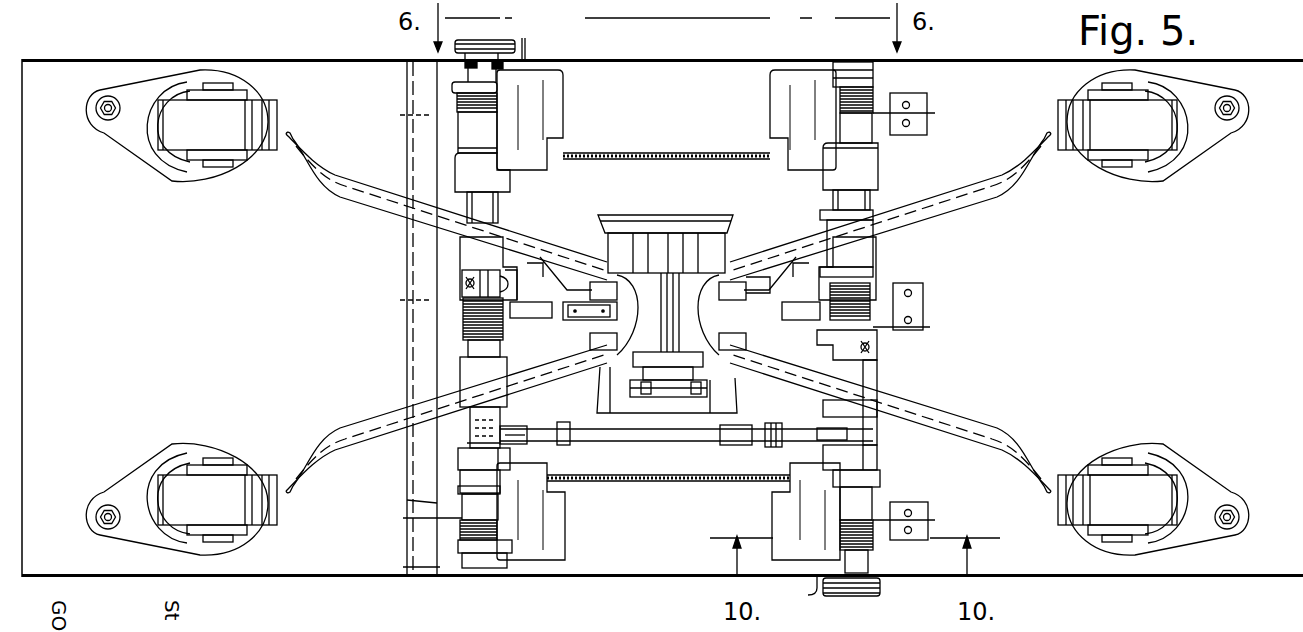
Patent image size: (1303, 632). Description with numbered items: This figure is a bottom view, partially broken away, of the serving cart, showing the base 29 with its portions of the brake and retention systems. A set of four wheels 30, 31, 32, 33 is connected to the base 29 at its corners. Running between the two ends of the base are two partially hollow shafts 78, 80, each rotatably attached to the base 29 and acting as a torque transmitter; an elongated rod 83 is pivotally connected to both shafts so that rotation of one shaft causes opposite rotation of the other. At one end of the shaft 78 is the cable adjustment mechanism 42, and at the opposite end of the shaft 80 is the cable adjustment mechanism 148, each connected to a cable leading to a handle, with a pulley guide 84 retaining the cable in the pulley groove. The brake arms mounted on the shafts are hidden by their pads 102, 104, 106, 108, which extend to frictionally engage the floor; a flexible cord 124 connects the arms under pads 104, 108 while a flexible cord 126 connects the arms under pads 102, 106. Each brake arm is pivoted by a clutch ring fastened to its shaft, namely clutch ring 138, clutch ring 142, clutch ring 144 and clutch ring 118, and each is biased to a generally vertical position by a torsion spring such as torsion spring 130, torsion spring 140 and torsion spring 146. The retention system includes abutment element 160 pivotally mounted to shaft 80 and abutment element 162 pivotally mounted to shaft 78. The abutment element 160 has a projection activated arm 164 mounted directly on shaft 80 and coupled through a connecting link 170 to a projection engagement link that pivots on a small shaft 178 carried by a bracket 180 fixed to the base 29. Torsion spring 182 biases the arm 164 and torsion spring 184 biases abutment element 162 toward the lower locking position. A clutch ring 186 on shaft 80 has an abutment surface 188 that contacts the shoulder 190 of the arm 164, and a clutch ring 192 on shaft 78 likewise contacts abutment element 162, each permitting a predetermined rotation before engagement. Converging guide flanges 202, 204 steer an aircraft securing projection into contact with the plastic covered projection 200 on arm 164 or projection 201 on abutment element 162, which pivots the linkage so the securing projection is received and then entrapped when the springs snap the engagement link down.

The base 29 is at (1092, 354).
The wheel 30 is at (1137, 487).
The wheel 31 is at (1137, 133).
The wheel 32 is at (200, 487).
The wheel 33 is at (213, 115).
The cable adjustment mechanism 42 is at (880, 591).
The shaft 78 is at (858, 197).
The shaft 80 is at (470, 80).
The elongated rod 83 is at (638, 432).
The pulley guide 84 is at (812, 582).
The pad 102 is at (556, 113).
The pad 104 is at (558, 522).
The pad 106 is at (782, 77).
The pad 108 is at (785, 504).
The clutch ring 118 is at (862, 170).
The flexible cord 124 is at (666, 478).
The flexible cord 126 is at (684, 154).
The torsion spring 130 is at (877, 535).
The clutch ring 138 is at (467, 178).
The torsion spring 140 is at (465, 532).
The clutch ring 142 is at (466, 458).
The clutch ring 144 is at (870, 457).
The torsion spring 146 is at (873, 92).
The cable adjustment mechanism 148 is at (515, 40).
The abutment element 160 is at (515, 262).
The abutment element 162 is at (795, 278).
The projection activated arm 164 is at (525, 273).
The connecting link 170 is at (575, 300).
The small shaft 178 is at (643, 283).
The bracket 180 is at (715, 395).
The torsion spring 182 is at (462, 330).
The torsion spring 184 is at (870, 282).
The clutch ring 186 is at (462, 283).
The abutment surface 188 is at (462, 300).
The shoulder 190 is at (500, 268).
The clutch ring 192 is at (877, 346).
The projection 200 is at (542, 313).
The projection 201 is at (800, 305).
The guide flange 202 is at (340, 433).
The guide flange 204 is at (322, 175).